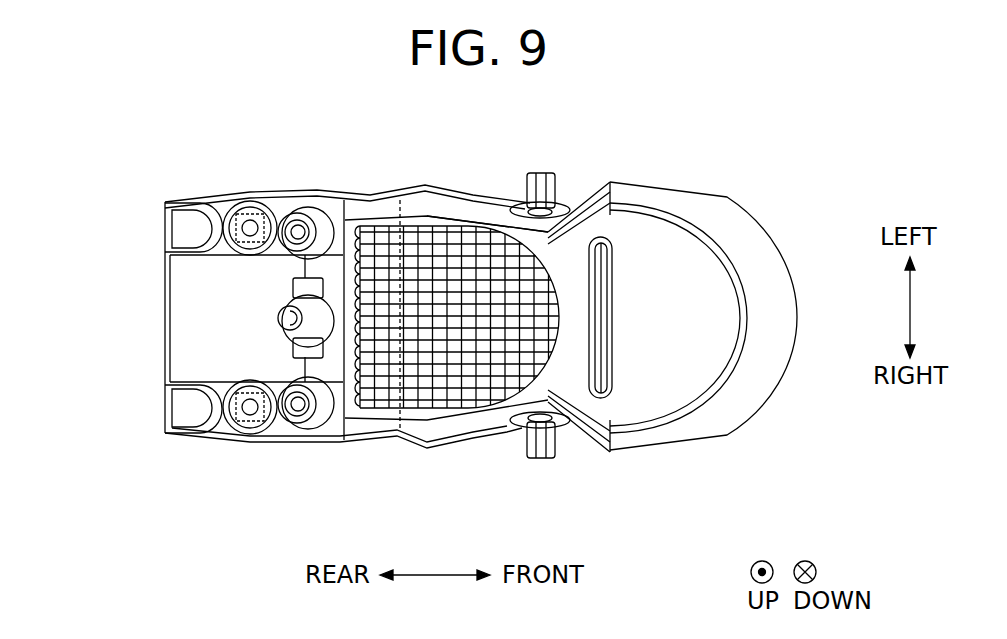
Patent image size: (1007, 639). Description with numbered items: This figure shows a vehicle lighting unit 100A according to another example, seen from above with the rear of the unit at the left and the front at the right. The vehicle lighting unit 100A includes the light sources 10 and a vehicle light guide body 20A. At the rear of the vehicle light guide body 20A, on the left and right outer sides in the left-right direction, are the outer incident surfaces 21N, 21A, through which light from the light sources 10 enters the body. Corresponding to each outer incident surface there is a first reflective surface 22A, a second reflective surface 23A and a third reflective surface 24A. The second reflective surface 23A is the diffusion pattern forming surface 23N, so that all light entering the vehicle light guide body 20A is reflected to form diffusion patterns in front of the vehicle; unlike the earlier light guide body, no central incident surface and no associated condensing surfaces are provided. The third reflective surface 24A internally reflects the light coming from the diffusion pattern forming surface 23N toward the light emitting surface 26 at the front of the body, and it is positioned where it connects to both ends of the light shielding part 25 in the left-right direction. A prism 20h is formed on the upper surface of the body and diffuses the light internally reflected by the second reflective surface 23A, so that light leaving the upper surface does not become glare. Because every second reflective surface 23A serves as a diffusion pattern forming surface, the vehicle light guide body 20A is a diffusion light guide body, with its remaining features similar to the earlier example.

The vehicle lighting unit 100A is at (775, 157).
The vehicle light guide body 20A is at (397, 455).
The prism 20h is at (483, 387).
The light shielding part 25 is at (400, 200).
The third reflective surface 24A is at (467, 210).
The light emitting surface 26 is at (770, 398).
The light sources 10 is at (243, 210).
The outer incident surfaces 21N is at (234, 306).
The fan 21A is at (250, 226).
The first reflective surface 22A is at (283, 210).
The diffusion pattern forming surface 23N is at (128, 298).
The second reflective surface 23A is at (188, 198).